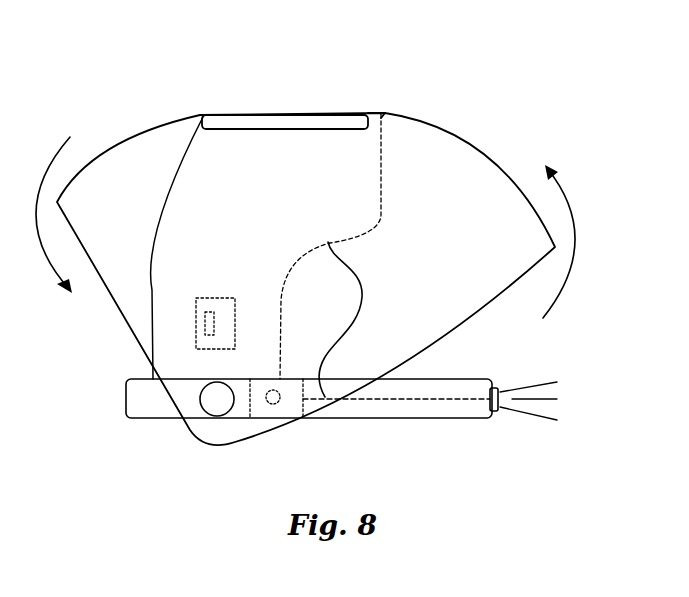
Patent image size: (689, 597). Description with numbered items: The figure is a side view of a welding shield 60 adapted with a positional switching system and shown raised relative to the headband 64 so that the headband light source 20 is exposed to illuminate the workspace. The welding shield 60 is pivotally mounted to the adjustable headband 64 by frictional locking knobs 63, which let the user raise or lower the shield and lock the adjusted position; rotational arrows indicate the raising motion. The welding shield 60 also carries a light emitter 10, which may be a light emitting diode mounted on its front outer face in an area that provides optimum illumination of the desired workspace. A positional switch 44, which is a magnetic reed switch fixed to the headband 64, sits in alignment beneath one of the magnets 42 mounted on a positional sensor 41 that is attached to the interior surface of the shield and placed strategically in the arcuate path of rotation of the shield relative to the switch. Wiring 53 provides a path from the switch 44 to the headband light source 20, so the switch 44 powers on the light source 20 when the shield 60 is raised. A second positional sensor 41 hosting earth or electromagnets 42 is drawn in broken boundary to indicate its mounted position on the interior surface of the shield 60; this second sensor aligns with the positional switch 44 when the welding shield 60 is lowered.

The light emitter 10 is at (306, 279).
The headband light source 20 is at (517, 378).
The positional sensor 41 is at (222, 298).
The magnets 42 is at (197, 323).
The positional switch 44 is at (275, 410).
The wiring 53 is at (348, 319).
The welding shield 60 is at (453, 103).
The locking knobs 63 is at (216, 380).
The headband 64 is at (125, 405).